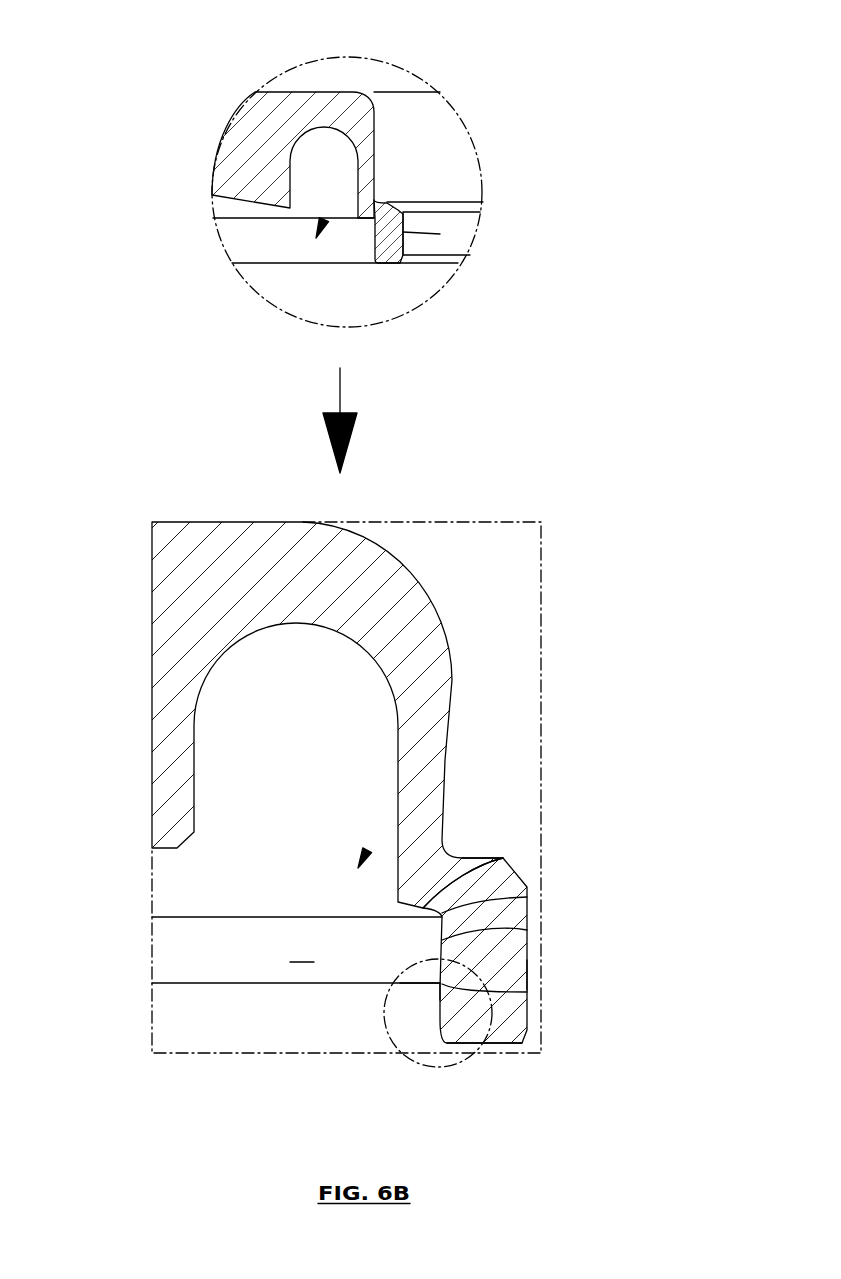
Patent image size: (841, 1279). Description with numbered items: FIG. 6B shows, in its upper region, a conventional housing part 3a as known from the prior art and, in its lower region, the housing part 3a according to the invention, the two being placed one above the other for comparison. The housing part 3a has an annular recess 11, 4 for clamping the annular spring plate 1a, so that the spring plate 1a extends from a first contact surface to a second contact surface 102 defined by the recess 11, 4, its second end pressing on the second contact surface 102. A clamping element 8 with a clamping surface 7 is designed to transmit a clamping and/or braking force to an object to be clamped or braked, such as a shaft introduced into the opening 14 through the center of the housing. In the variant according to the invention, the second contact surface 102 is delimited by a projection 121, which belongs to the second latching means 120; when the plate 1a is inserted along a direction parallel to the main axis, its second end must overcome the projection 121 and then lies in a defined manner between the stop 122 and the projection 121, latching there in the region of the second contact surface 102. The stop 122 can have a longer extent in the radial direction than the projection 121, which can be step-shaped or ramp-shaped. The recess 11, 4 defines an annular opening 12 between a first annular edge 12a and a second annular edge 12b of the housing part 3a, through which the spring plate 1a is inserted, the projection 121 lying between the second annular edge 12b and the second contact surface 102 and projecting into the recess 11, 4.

The housing part 3a is at (253, 137).
The spring plate 1a is at (342, 247).
The first annular edge 12a is at (385, 265).
The opening 14 is at (460, 170).
The clamping surface 7 is at (403, 220).
The clamping element 8 is at (385, 208).
The second contact surface 102 is at (403, 232).
The second latching means 120 is at (527, 897).
The stop 122 is at (497, 858).
The projection 121 is at (440, 986).
The annular opening 12 is at (330, 1038).
The second annular edge 12b is at (495, 1045).
The annular recess 11 is at (467, 454).
The direction of insertion 4 is at (320, 228).